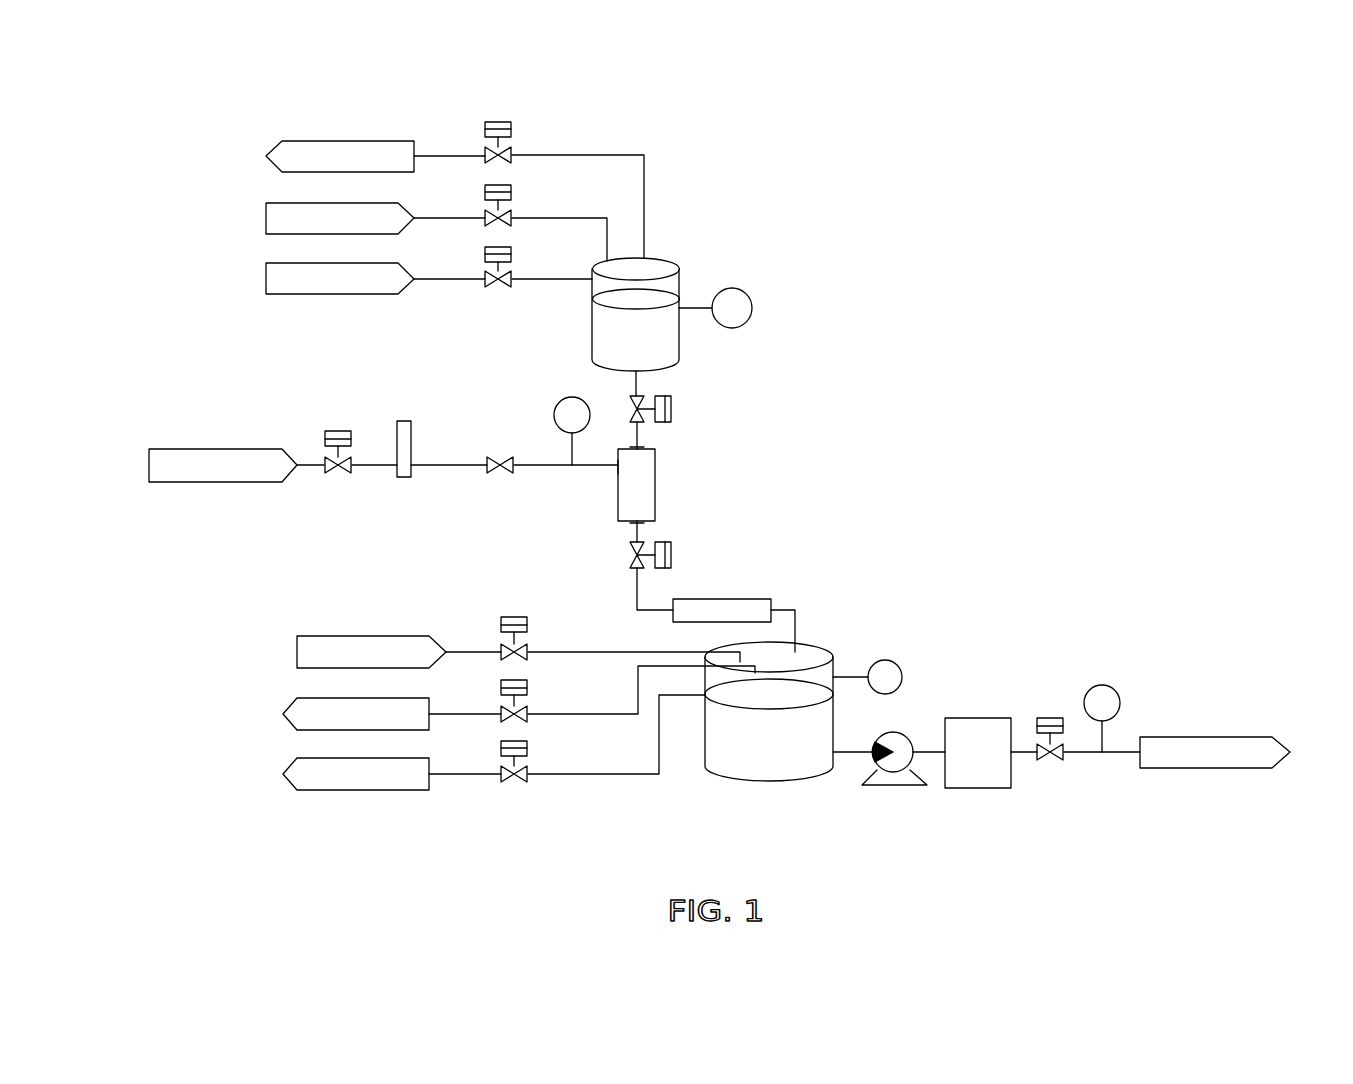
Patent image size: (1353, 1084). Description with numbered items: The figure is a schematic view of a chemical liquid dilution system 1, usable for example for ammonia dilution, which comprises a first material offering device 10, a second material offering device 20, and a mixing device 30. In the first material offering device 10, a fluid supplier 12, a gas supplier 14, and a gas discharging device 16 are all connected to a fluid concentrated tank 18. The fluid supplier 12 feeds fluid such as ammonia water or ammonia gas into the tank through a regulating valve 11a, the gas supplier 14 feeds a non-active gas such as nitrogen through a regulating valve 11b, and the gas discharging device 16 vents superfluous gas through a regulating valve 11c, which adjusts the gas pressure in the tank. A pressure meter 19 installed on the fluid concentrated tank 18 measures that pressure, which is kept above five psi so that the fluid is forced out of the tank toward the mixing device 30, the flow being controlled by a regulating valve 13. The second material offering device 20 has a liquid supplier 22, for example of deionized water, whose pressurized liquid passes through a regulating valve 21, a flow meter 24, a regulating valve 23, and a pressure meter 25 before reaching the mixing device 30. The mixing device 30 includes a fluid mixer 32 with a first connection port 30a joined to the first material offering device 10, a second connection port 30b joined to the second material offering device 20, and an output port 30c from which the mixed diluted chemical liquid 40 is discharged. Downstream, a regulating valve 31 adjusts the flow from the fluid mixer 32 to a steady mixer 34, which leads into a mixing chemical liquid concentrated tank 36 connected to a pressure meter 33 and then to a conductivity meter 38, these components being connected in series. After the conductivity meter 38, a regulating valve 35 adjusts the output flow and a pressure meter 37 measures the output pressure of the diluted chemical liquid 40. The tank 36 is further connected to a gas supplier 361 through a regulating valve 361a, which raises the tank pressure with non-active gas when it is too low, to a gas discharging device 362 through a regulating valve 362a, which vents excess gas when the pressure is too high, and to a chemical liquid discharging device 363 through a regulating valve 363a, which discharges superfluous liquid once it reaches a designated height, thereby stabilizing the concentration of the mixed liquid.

The chemical liquid dilution system 1 is at (198, 140).
The first material offering device 10 is at (651, 131).
The regulating valve 11a is at (511, 258).
The regulating valve 11b is at (511, 195).
The regulating valve 11c is at (511, 131).
The fluid supplier 12 is at (278, 278).
The gas supplier 14 is at (278, 215).
The gas discharging device 16 is at (343, 158).
The fluid concentrated tank 18 is at (664, 269).
The pressure meter 19 is at (752, 306).
The regulating valve 13 is at (672, 406).
The second material offering device 20 is at (166, 430).
The regulating valve 21 is at (338, 431).
The liquid supplier 22 is at (188, 468).
The regulating valve 23 is at (510, 460).
The flow meter 24 is at (402, 426).
The pressure meter 25 is at (562, 407).
The mixing device 30 is at (844, 535).
The first connection port 30a is at (657, 449).
The second connection port 30b is at (618, 466).
The output port 30c is at (633, 532).
The regulating valve 31 is at (673, 555).
The fluid mixer 32 is at (657, 486).
The pressure meter 33 is at (888, 670).
The steady mixer 34 is at (742, 606).
The regulating valve 35 is at (1048, 718).
The mixing chemical liquid concentrated tank 36 is at (763, 763).
The pressure meter 37 is at (1110, 698).
The conductivity meter 38 is at (977, 770).
The diluted chemical liquid 40 is at (1228, 757).
The gas supplier 361 is at (361, 648).
The gas discharging device 362 is at (292, 708).
The chemical liquid discharging device 363 is at (292, 771).
The regulating valve 361a is at (529, 629).
The regulating valve 362a is at (529, 692).
The regulating valve 363a is at (529, 754).